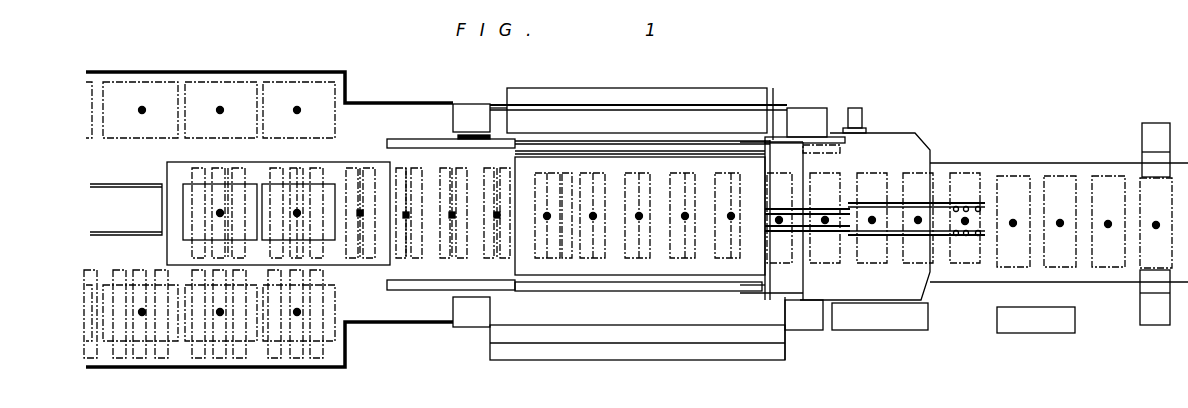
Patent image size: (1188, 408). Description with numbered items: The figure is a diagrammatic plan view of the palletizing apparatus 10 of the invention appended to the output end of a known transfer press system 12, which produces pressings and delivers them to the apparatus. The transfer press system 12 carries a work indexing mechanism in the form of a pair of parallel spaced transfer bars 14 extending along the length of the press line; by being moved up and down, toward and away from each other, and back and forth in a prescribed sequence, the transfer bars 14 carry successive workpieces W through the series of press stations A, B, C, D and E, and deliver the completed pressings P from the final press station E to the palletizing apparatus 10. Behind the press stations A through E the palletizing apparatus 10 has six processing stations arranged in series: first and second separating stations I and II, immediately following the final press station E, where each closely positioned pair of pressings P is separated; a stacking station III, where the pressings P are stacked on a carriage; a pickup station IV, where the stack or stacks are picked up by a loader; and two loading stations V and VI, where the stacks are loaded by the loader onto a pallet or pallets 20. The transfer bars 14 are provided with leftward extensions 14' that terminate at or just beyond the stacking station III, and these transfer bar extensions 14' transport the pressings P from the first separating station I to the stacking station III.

The palletizing apparatus 10 is at (302, 66).
The transfer press system 12 is at (815, 90).
The transfer bars 14 is at (659, 190).
The transfer bar extensions 14' is at (451, 216).
The pallet 20 is at (335, 125).
The pressings P is at (185, 178).
The workpieces W is at (580, 173).
The press station A is at (733, 173).
The press station B is at (686, 173).
The press station C is at (640, 173).
The press station D is at (595, 173).
The final press station E is at (545, 173).
The first separating station I is at (504, 164).
The second separating station II is at (461, 164).
The stacking station III is at (418, 164).
The pickup station IV is at (372, 158).
The loading station V is at (308, 160).
The loading station VI is at (240, 160).